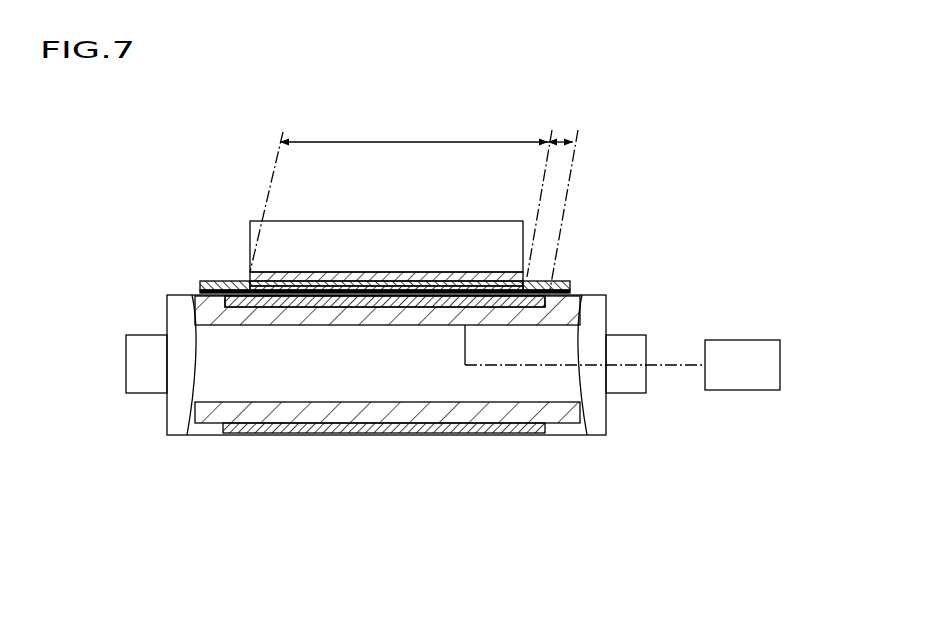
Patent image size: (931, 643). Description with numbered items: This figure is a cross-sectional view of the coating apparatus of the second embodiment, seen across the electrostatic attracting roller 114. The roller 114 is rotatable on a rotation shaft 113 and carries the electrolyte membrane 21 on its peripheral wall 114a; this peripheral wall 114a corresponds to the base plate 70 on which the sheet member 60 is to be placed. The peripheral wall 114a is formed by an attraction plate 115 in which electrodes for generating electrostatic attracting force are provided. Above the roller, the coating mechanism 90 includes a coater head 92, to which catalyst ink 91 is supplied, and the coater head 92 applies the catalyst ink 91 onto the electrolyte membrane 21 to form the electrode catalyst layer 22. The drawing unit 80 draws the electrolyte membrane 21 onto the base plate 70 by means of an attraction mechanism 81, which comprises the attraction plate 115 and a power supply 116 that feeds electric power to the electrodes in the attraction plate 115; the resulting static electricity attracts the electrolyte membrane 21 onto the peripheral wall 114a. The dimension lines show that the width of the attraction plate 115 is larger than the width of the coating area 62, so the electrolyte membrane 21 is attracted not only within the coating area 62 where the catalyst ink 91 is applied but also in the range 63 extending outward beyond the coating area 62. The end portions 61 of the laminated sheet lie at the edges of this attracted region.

The coating area 62 is at (420, 142).
The range extending outward beyond the coating area 63 is at (561, 141).
The coating mechanism 90 is at (360, 224).
The coater head 92 is at (312, 232).
The catalyst ink 91 is at (357, 275).
The sheet member 60 is at (386, 298).
The end portion 61 is at (199, 287).
The electrode catalyst layer 22 is at (300, 294).
The electrolyte membrane 21 is at (343, 298).
The attraction plate 115 is at (250, 291).
The drawing unit 80 is at (393, 308).
The attraction mechanism 81 is at (684, 357).
The rotation shaft 113 is at (142, 391).
The electrostatic attracting roller 114 is at (183, 425).
The peripheral wall 114a is at (272, 440).
The base plate 70 is at (270, 495).
The power supply 116 is at (735, 380).